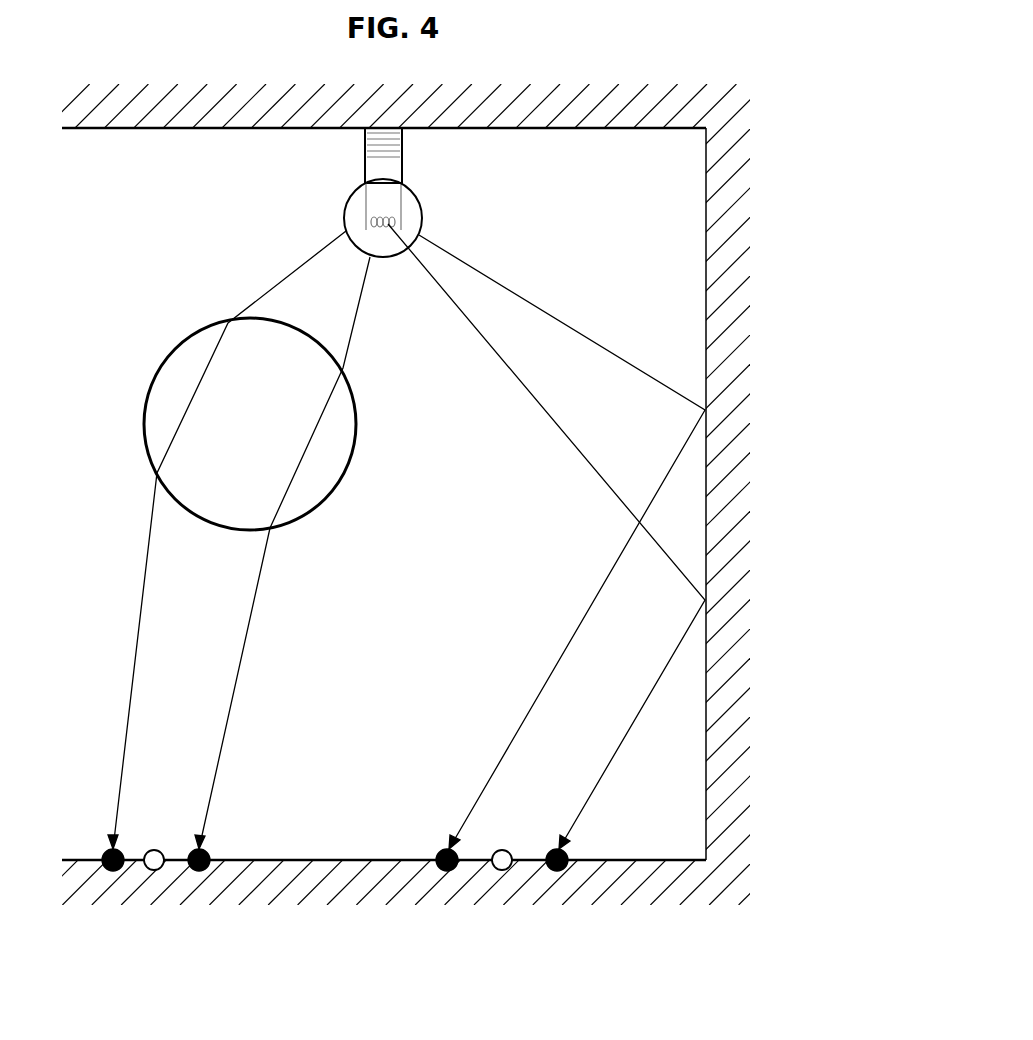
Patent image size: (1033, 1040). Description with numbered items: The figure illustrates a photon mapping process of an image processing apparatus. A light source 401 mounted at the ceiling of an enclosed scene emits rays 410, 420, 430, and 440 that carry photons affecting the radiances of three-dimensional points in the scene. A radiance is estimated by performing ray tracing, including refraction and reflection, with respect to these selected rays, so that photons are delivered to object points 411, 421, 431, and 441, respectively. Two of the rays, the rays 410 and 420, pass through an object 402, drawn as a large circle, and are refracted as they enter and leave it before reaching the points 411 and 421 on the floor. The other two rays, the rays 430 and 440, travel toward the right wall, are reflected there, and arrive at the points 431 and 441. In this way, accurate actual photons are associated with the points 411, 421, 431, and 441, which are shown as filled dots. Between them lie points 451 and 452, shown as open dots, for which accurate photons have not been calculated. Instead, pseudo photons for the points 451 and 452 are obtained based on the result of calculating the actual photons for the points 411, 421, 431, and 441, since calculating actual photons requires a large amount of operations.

The light source 401 is at (420, 196).
The object 402 is at (147, 392).
The ray 410 is at (132, 668).
The ray 420 is at (238, 680).
The ray 430 is at (563, 320).
The ray 440 is at (505, 365).
The object point 411 is at (112, 871).
The object point 421 is at (199, 871).
The object point 431 is at (447, 871).
The object point 441 is at (557, 871).
The point 451 is at (154, 870).
The point 452 is at (502, 870).